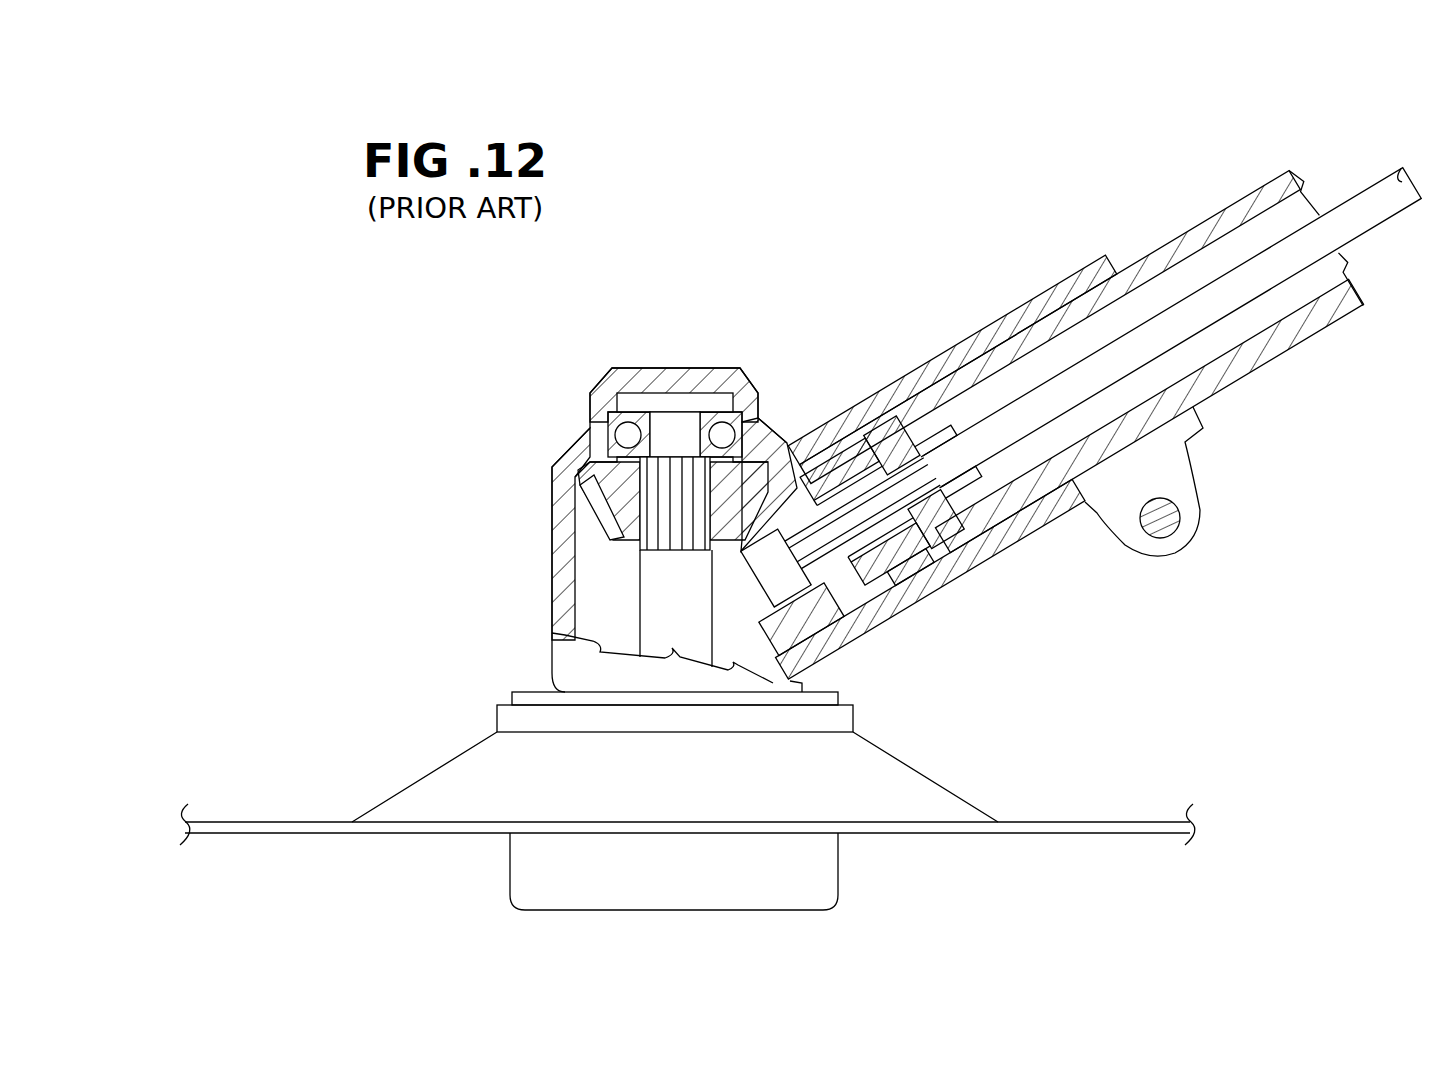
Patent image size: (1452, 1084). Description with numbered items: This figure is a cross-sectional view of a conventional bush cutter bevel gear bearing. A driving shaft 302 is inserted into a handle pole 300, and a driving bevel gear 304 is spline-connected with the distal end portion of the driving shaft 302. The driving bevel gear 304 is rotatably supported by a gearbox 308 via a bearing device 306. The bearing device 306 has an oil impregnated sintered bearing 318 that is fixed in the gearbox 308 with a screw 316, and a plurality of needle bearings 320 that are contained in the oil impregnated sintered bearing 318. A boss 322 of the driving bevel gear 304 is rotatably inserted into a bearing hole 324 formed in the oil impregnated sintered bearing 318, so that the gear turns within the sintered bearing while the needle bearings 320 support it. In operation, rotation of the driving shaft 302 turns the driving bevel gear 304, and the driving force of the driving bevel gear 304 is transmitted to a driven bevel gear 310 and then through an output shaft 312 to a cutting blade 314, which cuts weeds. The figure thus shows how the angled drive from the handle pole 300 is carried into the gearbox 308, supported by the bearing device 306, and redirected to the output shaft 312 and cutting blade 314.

The handle pole 300 is at (1210, 232).
The driving shaft 302 is at (1362, 200).
The driving bevel gear 304 is at (822, 610).
The bearing device 306 is at (985, 246).
The gearbox 308 is at (1030, 290).
The driven bevel gear 310 is at (617, 502).
The output shaft 312 is at (658, 590).
The cutting blade 314 is at (287, 822).
The screw 316 is at (910, 603).
The oil impregnated sintered bearing 318 is at (825, 455).
The needle bearings 320 is at (858, 437).
The boss 322 is at (967, 570).
The bearing hole 324 is at (782, 455).